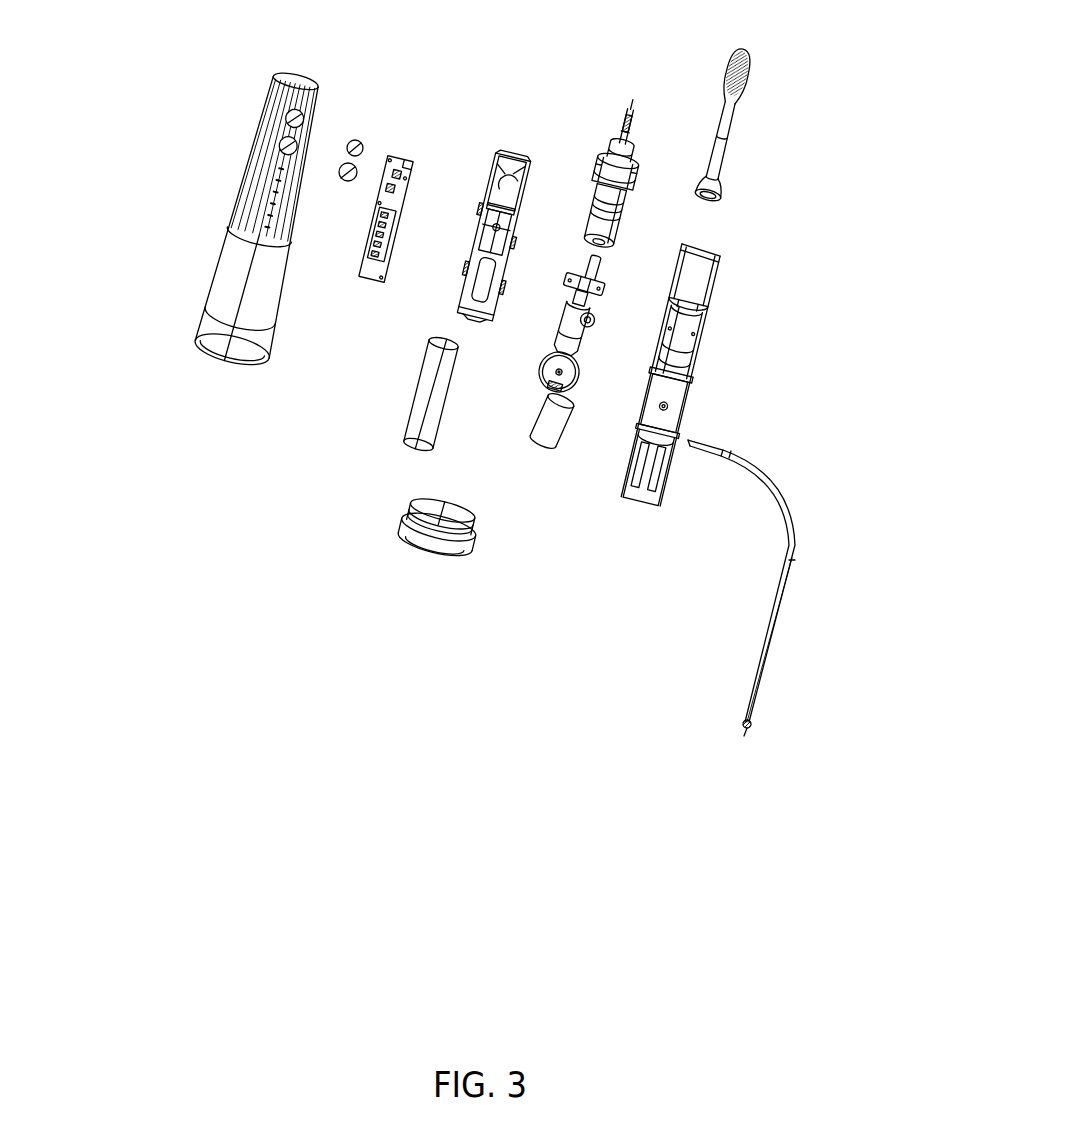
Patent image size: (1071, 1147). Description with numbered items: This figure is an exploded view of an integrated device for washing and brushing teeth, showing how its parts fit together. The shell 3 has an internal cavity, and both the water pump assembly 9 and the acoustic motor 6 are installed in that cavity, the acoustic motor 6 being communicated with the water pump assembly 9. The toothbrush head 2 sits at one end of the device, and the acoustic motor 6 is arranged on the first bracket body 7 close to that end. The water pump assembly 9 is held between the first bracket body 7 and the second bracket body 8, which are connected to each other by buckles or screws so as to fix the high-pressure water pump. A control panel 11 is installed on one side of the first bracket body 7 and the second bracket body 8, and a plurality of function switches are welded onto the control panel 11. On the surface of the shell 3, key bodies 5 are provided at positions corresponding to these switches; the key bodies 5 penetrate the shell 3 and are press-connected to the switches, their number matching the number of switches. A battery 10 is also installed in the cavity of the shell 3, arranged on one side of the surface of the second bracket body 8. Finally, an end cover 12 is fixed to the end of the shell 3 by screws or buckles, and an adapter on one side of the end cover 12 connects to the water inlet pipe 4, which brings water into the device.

The toothbrush head 2 is at (725, 157).
The shell 3 is at (213, 272).
The water inlet pipe 4 is at (790, 515).
The key body 5 is at (363, 137).
The acoustic motor 6 is at (605, 148).
The bracket body 1 7 is at (695, 373).
The bracket body 2 8 is at (455, 285).
The water pump assembly 9 is at (580, 340).
The battery 10 is at (405, 427).
The control panel 11 is at (405, 157).
The end cover 12 is at (430, 543).